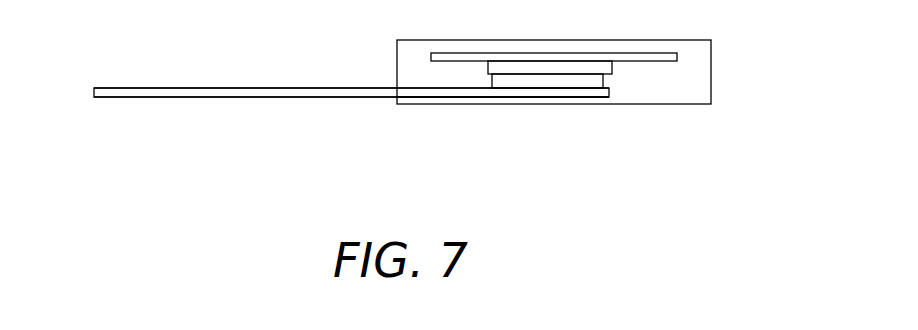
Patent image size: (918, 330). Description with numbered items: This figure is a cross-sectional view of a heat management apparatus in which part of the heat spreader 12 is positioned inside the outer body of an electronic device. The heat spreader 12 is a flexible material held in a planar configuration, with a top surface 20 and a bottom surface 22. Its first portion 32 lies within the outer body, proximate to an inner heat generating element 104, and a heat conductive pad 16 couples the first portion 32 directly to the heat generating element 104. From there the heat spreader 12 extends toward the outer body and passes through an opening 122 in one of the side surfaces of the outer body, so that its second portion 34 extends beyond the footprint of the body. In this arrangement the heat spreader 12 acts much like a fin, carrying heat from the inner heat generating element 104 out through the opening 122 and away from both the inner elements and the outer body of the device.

The top surface 20 is at (137, 88).
The bottom surface 22 is at (165, 97).
The second portion 34 is at (202, 88).
The first portion 32 is at (490, 92).
The opening 122 is at (390, 82).
The heat generating element 104 is at (638, 68).
The heat spreader 12 is at (583, 92).
The heat conductive pad 16 is at (603, 80).